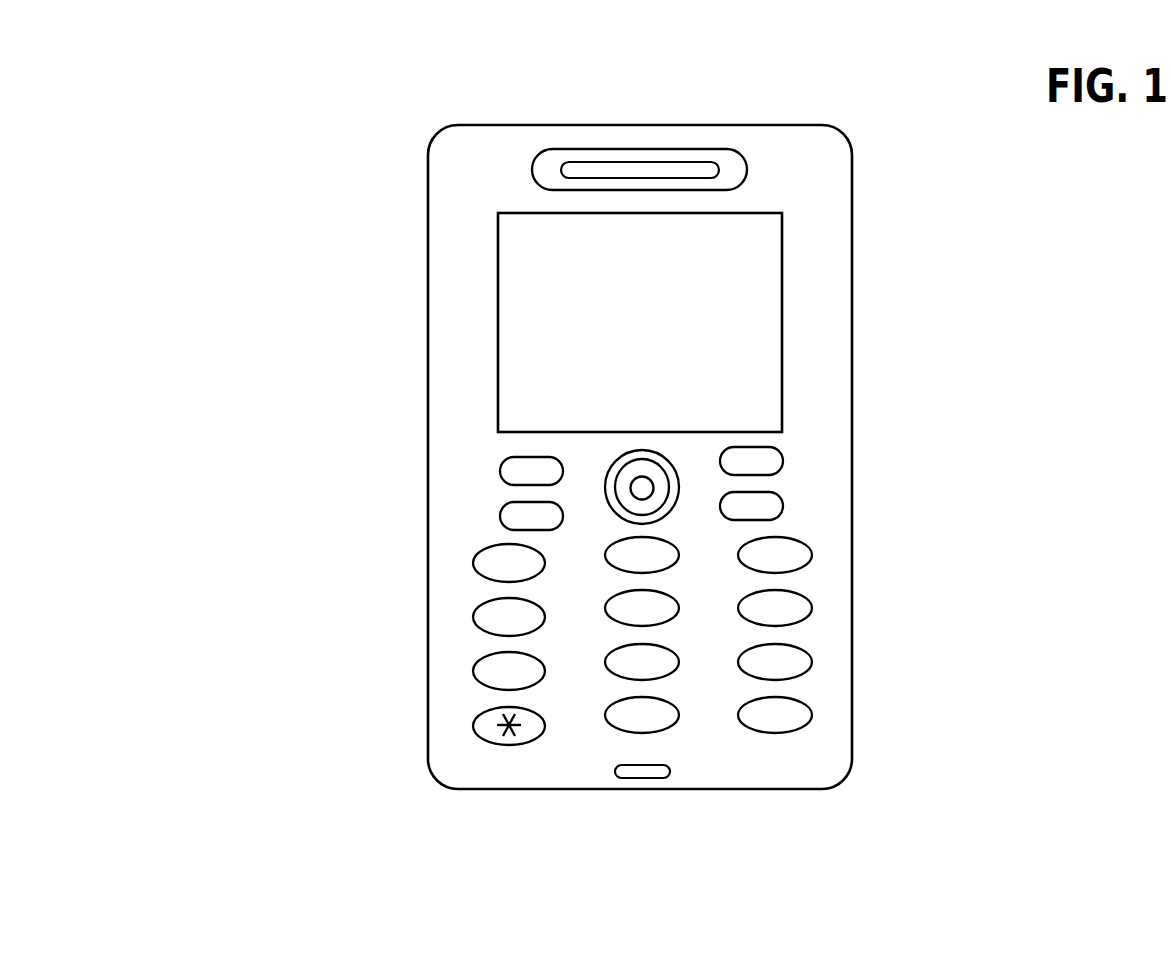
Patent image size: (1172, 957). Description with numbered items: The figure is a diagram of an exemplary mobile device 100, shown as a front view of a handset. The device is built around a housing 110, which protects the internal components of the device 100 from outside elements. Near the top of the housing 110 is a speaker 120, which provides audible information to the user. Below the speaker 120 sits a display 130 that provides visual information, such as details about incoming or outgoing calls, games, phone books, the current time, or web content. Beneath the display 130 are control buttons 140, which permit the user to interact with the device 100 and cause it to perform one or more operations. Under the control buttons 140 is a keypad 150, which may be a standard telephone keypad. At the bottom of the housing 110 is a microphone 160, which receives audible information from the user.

The mobile device 100 is at (124, 87).
The housing 110 is at (430, 161).
The speaker 120 is at (747, 167).
The display 130 is at (782, 320).
The control buttons 140 is at (800, 438).
The keypad 150 is at (823, 733).
The microphone 160 is at (643, 778).